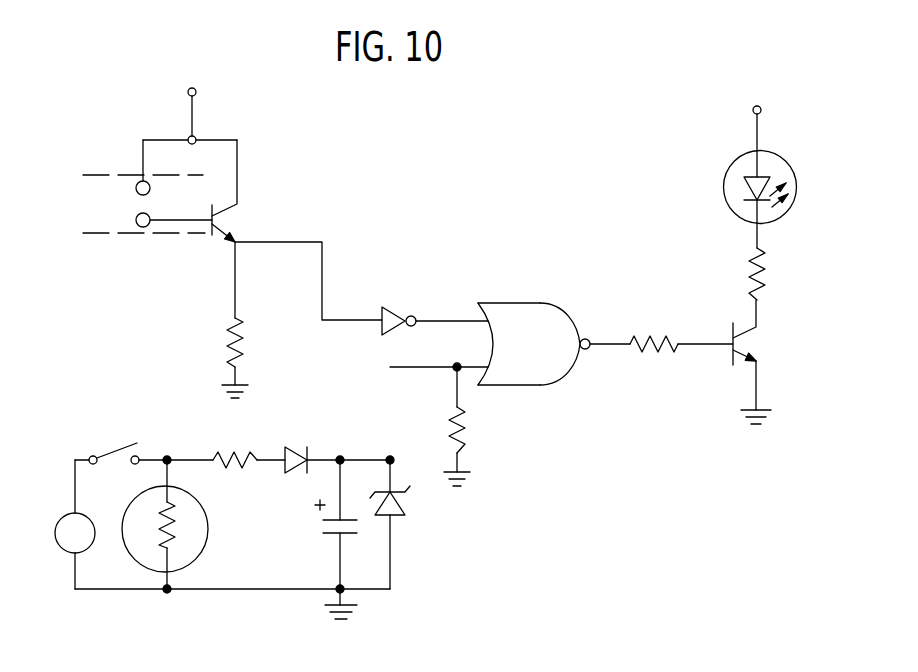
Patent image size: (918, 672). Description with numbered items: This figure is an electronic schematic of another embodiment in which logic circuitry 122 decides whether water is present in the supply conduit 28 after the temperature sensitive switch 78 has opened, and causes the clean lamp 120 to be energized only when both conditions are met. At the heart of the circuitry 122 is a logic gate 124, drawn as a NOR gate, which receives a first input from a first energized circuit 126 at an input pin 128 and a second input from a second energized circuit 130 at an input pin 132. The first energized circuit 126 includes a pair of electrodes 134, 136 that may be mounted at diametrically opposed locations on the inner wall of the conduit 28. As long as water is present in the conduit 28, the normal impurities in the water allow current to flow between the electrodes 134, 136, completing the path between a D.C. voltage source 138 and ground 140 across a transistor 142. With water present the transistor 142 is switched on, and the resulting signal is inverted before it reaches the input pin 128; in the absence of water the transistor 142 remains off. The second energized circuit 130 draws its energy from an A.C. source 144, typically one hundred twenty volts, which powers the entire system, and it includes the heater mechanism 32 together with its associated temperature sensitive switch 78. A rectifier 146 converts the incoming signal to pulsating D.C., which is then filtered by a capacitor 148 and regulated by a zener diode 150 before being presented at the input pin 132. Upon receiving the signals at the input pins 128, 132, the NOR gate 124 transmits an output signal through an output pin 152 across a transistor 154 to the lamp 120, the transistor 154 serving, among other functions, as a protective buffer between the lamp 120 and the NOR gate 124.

The D.C. voltage source 138 is at (196, 92).
The electrode 134 is at (136, 187).
The electrode 136 is at (136, 220).
The supply conduit 28 is at (160, 237).
The transistor 142 is at (228, 206).
The first energized circuit 126 is at (337, 238).
The ground 140 is at (238, 384).
The input pin 128 is at (496, 303).
The logic gate 124 is at (547, 305).
The output pin 152 is at (590, 338).
The input pin 132 is at (518, 386).
The logic circuitry 122 is at (510, 380).
The transistor 154 is at (746, 349).
The clean lamp 120 is at (730, 162).
The temperature sensitive switch 78 is at (115, 448).
The A.C. source 144 is at (60, 527).
The heater mechanism 32 is at (170, 520).
The rectifier 146 is at (295, 448).
The capacitor 148 is at (327, 526).
The zener diode 150 is at (403, 497).
The second energized circuit 130 is at (291, 600).